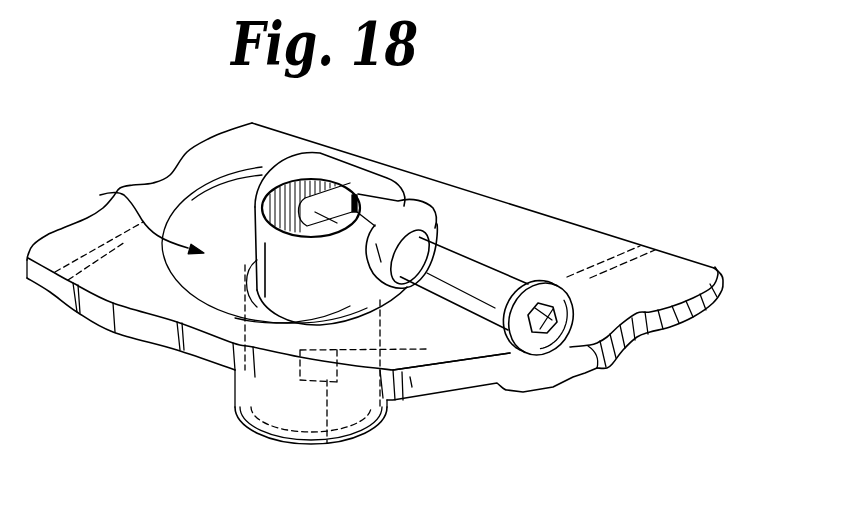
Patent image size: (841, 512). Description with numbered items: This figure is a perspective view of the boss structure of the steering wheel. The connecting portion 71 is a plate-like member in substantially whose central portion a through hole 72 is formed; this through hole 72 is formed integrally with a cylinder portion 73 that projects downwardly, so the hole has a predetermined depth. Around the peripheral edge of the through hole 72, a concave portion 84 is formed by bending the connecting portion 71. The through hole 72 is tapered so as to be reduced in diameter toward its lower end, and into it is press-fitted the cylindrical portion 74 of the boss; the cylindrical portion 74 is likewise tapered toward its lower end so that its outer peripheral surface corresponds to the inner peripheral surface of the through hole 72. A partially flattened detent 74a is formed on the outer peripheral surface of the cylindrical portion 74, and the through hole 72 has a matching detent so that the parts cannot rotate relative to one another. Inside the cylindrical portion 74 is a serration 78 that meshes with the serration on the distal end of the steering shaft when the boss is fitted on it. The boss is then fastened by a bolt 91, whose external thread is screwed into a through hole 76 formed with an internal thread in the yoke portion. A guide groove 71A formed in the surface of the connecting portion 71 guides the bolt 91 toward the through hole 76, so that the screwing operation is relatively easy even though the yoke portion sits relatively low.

The connecting portion 71 is at (670, 254).
The guide groove 71A is at (478, 339).
The through hole 72 is at (268, 438).
The cylinder portion 73 is at (235, 394).
The cylindrical portion 74 is at (379, 359).
The detent 74a is at (326, 445).
The through hole 76 is at (318, 173).
The serration 78 is at (265, 187).
The concave portion 84 is at (138, 219).
The bolt 91 is at (467, 264).